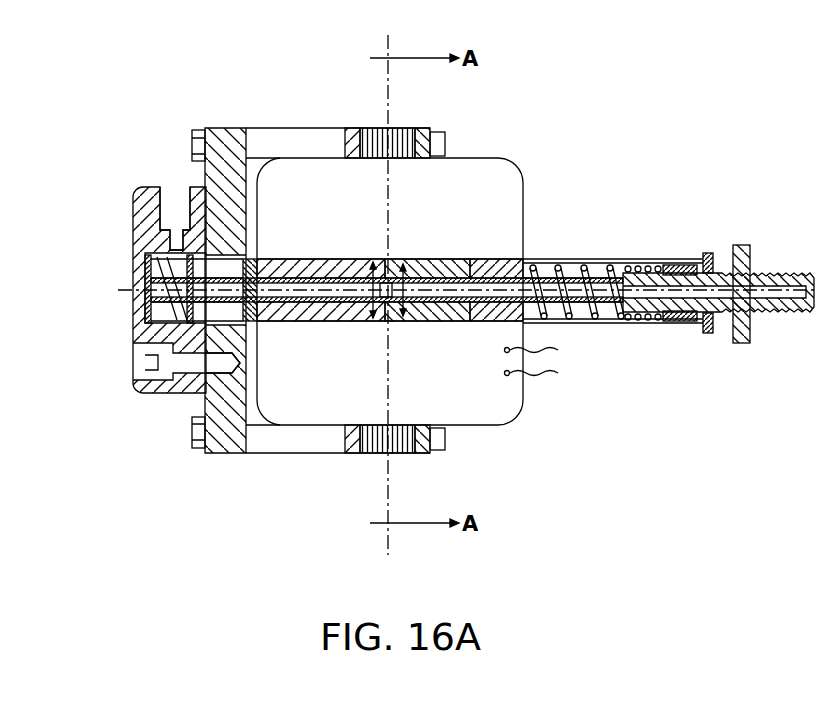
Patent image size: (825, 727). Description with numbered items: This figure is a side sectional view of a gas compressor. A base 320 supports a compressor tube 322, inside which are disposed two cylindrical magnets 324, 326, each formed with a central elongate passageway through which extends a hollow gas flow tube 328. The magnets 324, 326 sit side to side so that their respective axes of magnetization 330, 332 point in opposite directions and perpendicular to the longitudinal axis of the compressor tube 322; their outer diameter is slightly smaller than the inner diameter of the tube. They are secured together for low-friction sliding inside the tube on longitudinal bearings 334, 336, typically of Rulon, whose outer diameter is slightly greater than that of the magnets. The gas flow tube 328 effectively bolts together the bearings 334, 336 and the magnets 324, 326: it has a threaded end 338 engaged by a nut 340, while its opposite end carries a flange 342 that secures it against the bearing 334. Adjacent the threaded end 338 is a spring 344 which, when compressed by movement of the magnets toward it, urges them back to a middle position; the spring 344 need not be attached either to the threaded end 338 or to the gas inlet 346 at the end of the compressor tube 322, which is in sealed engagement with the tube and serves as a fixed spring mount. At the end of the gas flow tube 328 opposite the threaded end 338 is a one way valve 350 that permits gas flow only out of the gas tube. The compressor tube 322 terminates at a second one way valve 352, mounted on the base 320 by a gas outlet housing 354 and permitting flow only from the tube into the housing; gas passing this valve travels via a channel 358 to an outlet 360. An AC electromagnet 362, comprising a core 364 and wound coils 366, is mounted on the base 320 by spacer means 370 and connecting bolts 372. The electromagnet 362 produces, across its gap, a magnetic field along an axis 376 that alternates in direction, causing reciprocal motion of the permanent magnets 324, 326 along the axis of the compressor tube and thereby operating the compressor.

The base 320 is at (220, 395).
The compressor tube 322 is at (597, 267).
The cylindrical magnet 324 is at (352, 266).
The cylindrical magnet 326 is at (422, 266).
The gas flow tube 328 is at (470, 318).
The axis of magnetization 330 is at (367, 312).
The axis of magnetization 332 is at (415, 317).
The longitudinal bearing 334 is at (293, 258).
The longitudinal bearing 336 is at (480, 266).
The threaded end 338 is at (530, 263).
The nut 340 is at (497, 320).
The flange 342 is at (257, 258).
The spring 344 is at (600, 322).
The gas inlet 346 is at (692, 268).
The one way valve 350 is at (197, 296).
The second one way valve 352 is at (197, 290).
The gas outlet housing 354 is at (140, 218).
The channel 358 is at (147, 251).
The outlet 360 is at (168, 190).
The AC electromagnet 362 is at (436, 117).
The core 364 is at (393, 453).
The wound coils 366 is at (507, 198).
The spacer means 370 is at (310, 443).
The connecting bolts 372 is at (193, 445).
The axis 376 is at (392, 405).